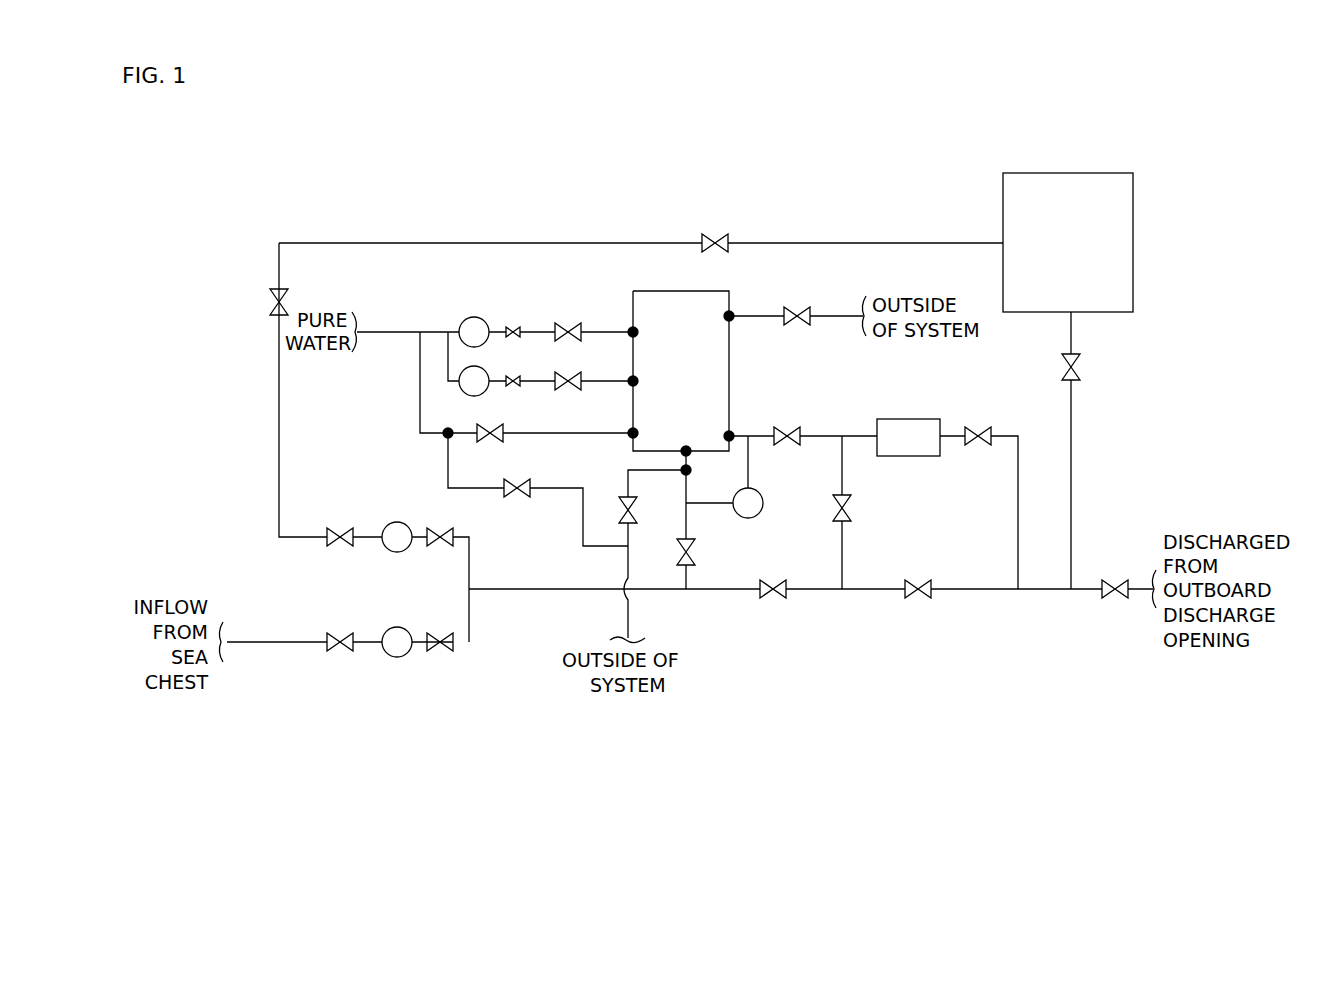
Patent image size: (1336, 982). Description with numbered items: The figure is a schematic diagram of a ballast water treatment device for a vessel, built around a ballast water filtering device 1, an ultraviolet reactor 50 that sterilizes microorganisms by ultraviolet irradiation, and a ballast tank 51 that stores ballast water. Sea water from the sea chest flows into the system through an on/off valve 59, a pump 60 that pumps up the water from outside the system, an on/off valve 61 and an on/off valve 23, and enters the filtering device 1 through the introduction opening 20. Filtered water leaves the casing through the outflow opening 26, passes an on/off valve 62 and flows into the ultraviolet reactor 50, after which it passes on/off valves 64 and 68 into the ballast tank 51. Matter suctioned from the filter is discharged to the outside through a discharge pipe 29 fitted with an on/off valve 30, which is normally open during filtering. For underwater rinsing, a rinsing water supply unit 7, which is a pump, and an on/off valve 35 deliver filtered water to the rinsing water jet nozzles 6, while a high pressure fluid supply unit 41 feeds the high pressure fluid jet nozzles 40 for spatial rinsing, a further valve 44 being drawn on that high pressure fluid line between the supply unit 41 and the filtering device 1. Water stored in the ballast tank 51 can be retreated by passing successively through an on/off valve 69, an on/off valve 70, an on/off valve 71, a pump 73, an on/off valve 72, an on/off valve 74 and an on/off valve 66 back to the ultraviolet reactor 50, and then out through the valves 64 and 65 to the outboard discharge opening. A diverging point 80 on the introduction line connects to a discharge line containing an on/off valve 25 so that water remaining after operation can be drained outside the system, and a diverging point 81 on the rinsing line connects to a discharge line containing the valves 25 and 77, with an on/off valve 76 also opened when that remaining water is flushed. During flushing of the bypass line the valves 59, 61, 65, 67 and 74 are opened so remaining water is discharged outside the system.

The ballast water filtering device 1 is at (733, 374).
The rinsing water jet nozzles 6 is at (630, 376).
The rinsing water supply unit 7 is at (462, 390).
The introduction opening 20 is at (688, 447).
The on/off valve 23 is at (695, 549).
The on/off valve 25 is at (622, 498).
The outflow opening 26 is at (630, 428).
The discharge pipe 29 is at (725, 320).
The on/off valve 30 is at (790, 312).
The on/off valve 35 is at (568, 390).
The high pressure fluid jet nozzles 40 is at (630, 326).
The high pressure fluid supply unit 41 is at (484, 318).
The valve 44 is at (562, 322).
The ultraviolet reactor 50 is at (905, 460).
The ballast tank 51 is at (1135, 240).
The on/off valve 59 is at (338, 653).
The pump 60 is at (395, 660).
The on/off valve 61 is at (438, 653).
The on/off valve 62 is at (787, 428).
The on/off valve 64 is at (975, 428).
The on/off valve 65 is at (1110, 580).
The on/off valve 66 is at (848, 512).
The on/off valve 67 is at (920, 600).
The on/off valve 68 is at (1078, 362).
The on/off valve 69 is at (712, 238).
The on/off valve 70 is at (274, 304).
The on/off valve 71 is at (338, 530).
The on/off valve 72 is at (440, 548).
The pump 73 is at (398, 522).
The on/off valve 74 is at (776, 600).
The on/off valve 76 is at (488, 444).
The on/off valve 77 is at (520, 500).
The diverging point 80 is at (684, 479).
The diverging point 81 is at (441, 436).